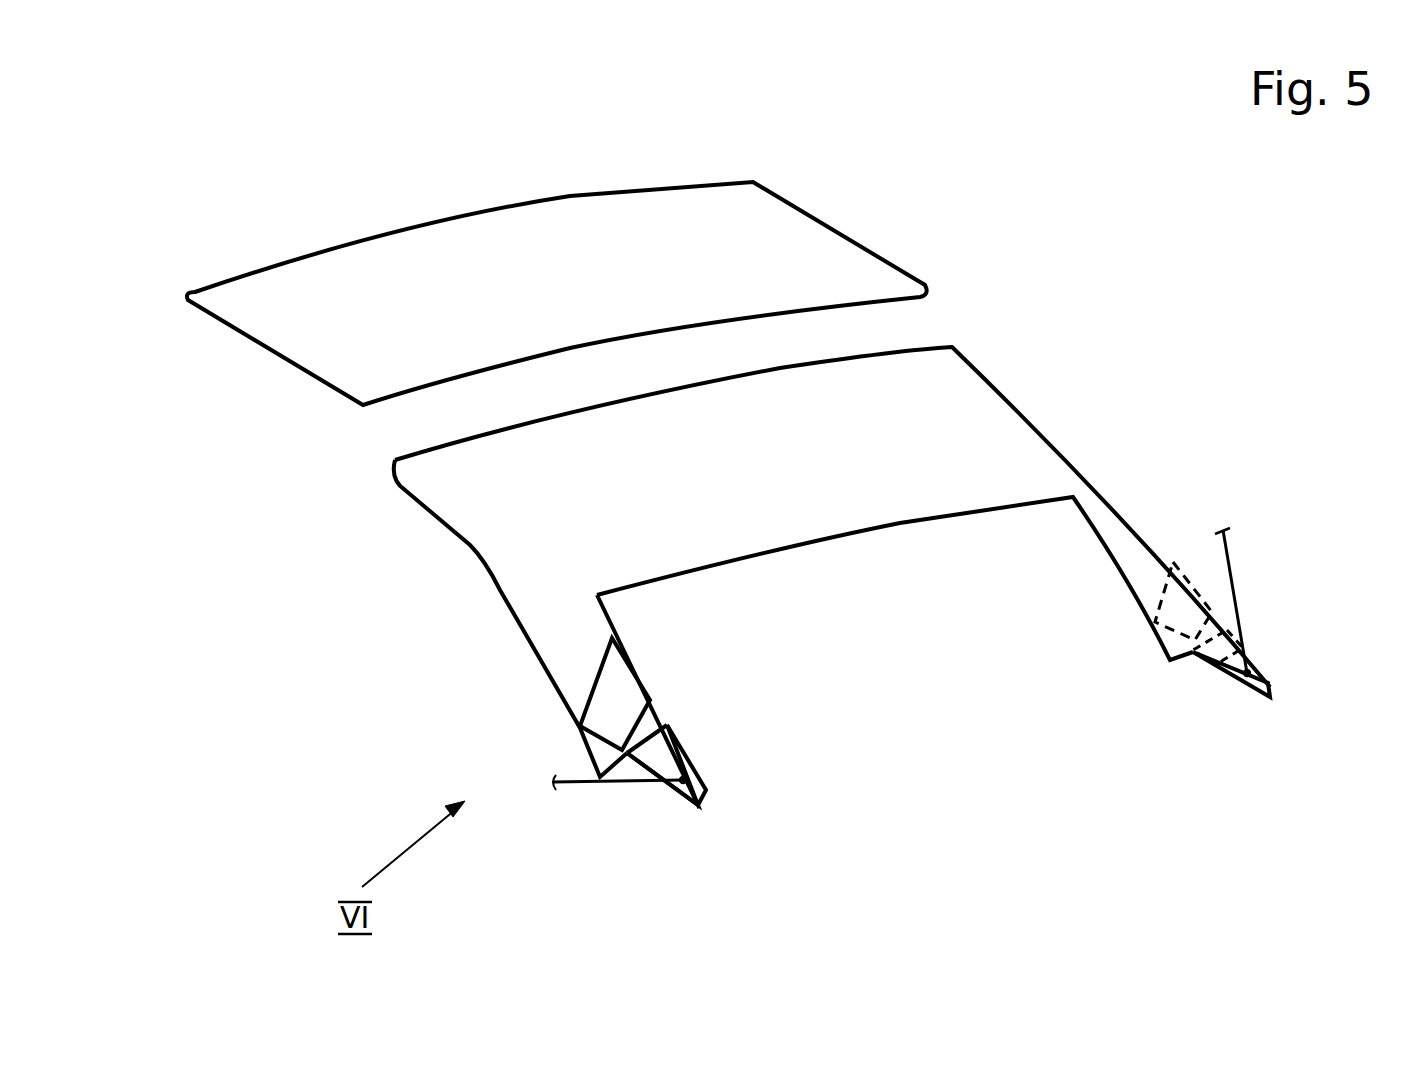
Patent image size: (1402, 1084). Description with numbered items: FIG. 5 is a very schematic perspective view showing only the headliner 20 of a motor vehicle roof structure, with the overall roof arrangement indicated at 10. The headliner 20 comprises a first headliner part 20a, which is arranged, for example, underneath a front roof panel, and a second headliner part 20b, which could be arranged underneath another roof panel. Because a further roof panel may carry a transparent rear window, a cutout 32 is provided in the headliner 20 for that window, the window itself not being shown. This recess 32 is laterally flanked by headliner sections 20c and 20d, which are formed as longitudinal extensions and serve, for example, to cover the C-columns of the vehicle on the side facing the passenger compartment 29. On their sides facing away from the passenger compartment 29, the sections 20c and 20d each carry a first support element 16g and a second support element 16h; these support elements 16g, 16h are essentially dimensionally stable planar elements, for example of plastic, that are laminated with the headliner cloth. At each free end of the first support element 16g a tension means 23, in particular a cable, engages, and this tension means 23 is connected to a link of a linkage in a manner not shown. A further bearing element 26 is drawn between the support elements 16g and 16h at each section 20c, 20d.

The vehicle roof 10 is at (1237, 255).
The headliner 20 is at (970, 308).
The first headliner part 20a is at (806, 258).
The second headliner part 20b is at (1005, 437).
The headliner section 20c is at (570, 658).
The headliner section 20d is at (1122, 530).
The first support element 16g is at (672, 762).
The second support element 16h is at (625, 686).
The tension means 23 is at (618, 786).
The bearing element 26 is at (652, 722).
The passenger compartment 29 is at (415, 562).
The cutout 32 is at (928, 693).